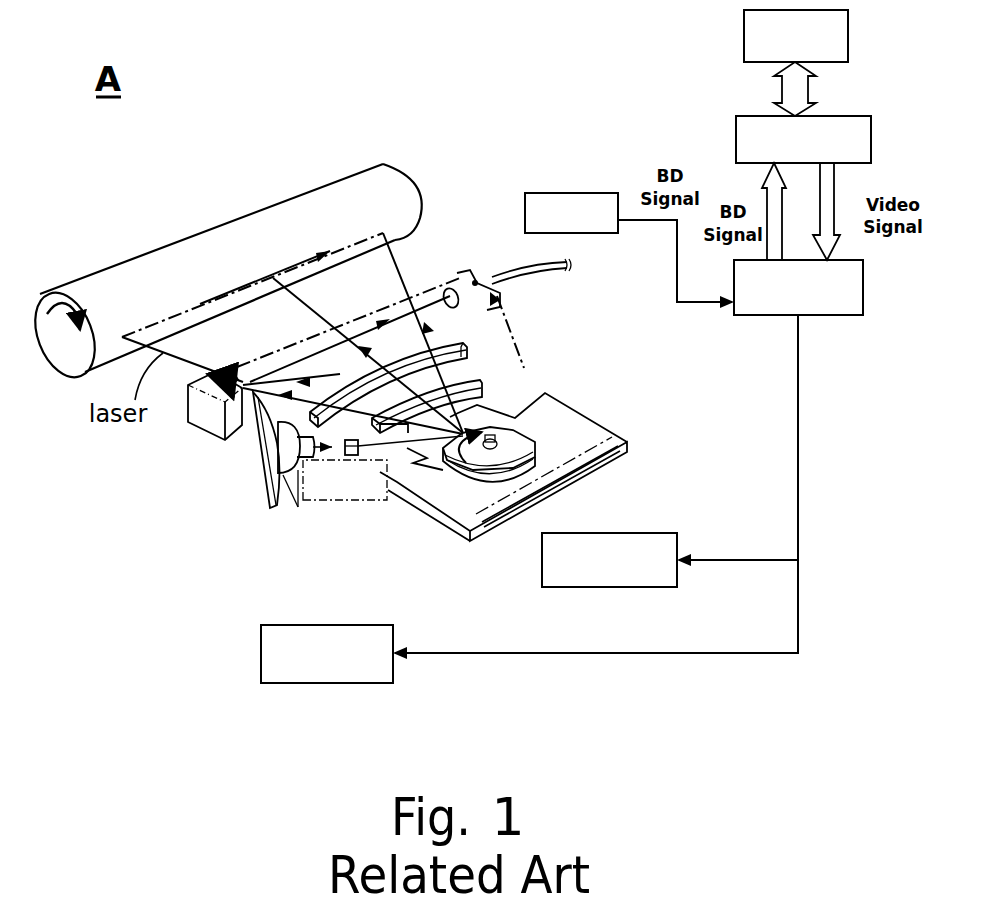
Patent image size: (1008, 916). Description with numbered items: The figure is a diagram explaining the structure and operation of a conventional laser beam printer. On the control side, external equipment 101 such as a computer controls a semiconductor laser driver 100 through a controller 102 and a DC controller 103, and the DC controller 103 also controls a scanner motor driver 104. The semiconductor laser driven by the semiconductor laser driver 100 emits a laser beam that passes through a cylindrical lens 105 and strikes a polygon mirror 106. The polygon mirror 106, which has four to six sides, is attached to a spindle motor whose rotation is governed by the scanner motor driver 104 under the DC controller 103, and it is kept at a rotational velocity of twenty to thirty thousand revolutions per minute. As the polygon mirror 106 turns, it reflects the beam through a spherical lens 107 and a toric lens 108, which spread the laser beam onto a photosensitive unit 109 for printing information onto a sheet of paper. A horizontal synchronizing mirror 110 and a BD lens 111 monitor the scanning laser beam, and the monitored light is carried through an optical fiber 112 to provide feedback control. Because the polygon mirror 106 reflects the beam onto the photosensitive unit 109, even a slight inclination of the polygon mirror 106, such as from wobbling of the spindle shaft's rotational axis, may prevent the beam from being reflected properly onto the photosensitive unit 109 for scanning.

The semiconductor laser driver 100 is at (320, 623).
The external equipment 101 is at (796, 36).
The controller 102 is at (803, 139).
The DC controller 103 is at (798, 287).
The scanner motor driver 104 is at (543, 556).
The cylindrical lens 105 is at (360, 442).
The polygon mirror 106 is at (513, 437).
The spherical lens 107 is at (448, 405).
The toric lens 108 is at (433, 368).
The photosensitive unit 109 is at (217, 243).
The horizontal synchronizing mirror 110 is at (240, 395).
The BD lens 111 is at (450, 290).
The optical fiber 112 is at (548, 259).